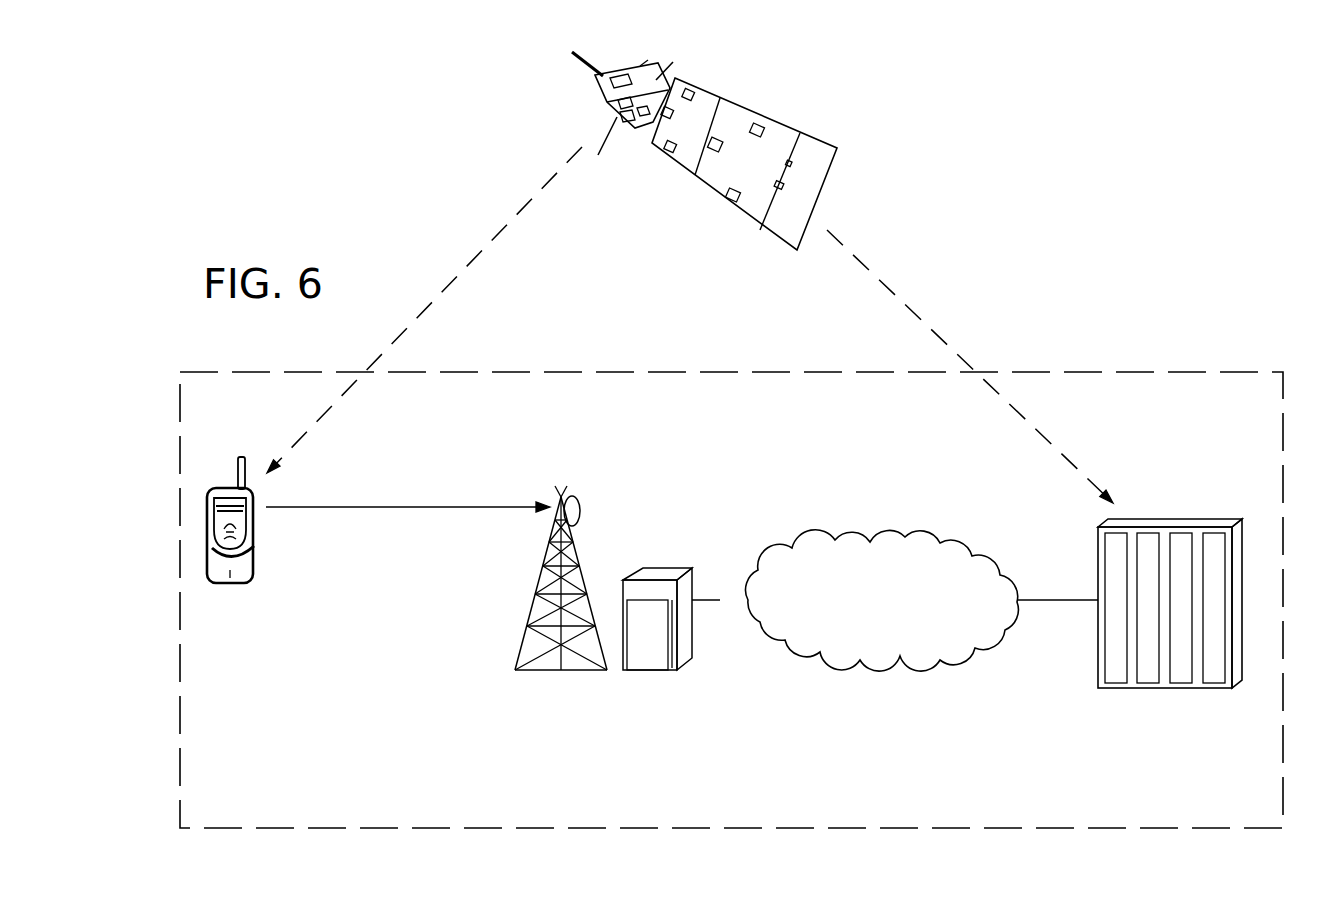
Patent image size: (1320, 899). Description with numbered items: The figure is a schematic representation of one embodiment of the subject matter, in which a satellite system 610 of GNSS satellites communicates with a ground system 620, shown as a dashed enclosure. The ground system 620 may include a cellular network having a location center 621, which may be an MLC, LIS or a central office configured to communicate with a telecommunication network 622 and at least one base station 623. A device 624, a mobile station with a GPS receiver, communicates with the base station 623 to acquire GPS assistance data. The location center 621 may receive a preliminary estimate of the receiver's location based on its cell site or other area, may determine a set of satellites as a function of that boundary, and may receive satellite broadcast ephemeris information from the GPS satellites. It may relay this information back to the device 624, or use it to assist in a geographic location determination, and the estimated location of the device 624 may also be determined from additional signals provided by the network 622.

The satellite system 610 is at (866, 195).
The ground system 620 is at (1123, 372).
The location center 621 is at (1153, 505).
The telecommunication network 622 is at (848, 537).
The base station 623 is at (578, 490).
The device 624 is at (223, 480).